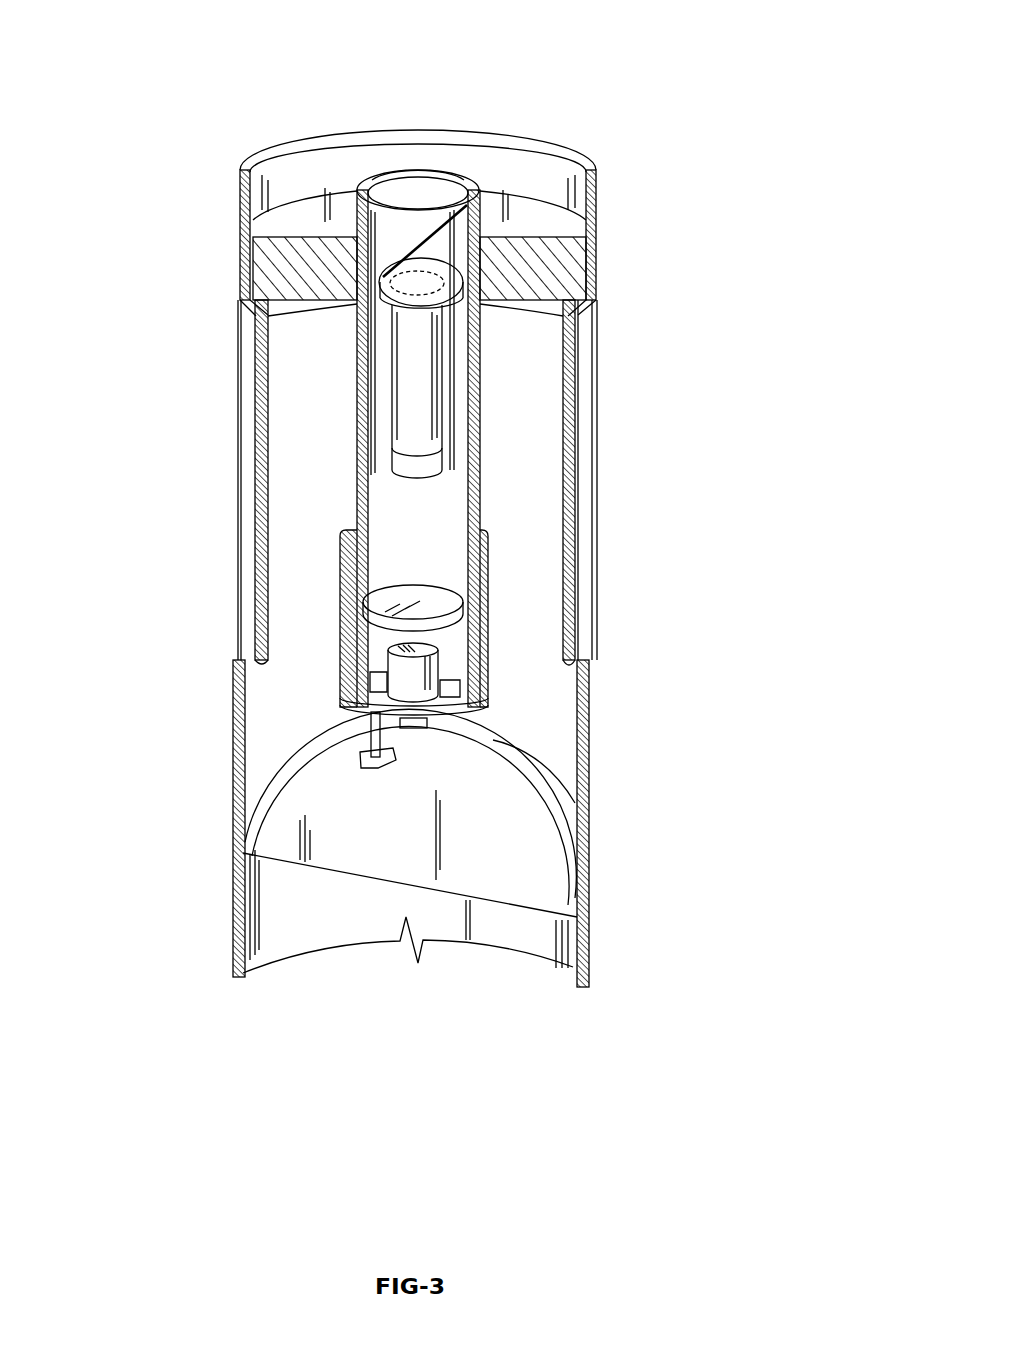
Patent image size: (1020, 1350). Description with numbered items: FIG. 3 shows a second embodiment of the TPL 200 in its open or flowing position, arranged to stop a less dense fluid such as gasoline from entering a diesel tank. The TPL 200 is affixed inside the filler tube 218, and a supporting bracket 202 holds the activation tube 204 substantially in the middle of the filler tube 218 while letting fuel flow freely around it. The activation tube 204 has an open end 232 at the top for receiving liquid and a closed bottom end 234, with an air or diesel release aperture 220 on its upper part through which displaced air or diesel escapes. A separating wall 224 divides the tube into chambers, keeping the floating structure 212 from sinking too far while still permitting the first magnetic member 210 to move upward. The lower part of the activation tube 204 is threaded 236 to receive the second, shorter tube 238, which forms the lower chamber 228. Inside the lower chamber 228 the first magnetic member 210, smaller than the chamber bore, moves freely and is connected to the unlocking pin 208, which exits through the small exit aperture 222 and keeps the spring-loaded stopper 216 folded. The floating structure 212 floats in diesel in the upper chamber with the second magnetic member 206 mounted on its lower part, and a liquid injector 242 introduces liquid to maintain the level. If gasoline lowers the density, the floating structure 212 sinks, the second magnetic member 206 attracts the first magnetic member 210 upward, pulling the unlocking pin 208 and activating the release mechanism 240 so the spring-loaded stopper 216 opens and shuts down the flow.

The TPL 200 is at (495, 494).
The supporting bracket 202 is at (310, 272).
The activation tube 204 is at (355, 500).
The second magnetic member 206 is at (407, 465).
The unlocking pin 208 is at (328, 740).
The first magnetic member 210 is at (410, 672).
The floating structure 212 is at (410, 362).
The spring-loaded stopper 216 is at (477, 863).
The filler tube 218 is at (662, 170).
The air or diesel release aperture 220 is at (482, 315).
The small exit aperture 222 is at (380, 710).
The separating wall 224 is at (345, 612).
The lower chamber 228 is at (452, 640).
The open end 232 is at (430, 192).
The closed bottom end 234 is at (470, 695).
The threaded portion 236 is at (432, 600).
The second tube 238 is at (375, 650).
The release mechanism 240 is at (396, 762).
The liquid injector 242 is at (370, 313).